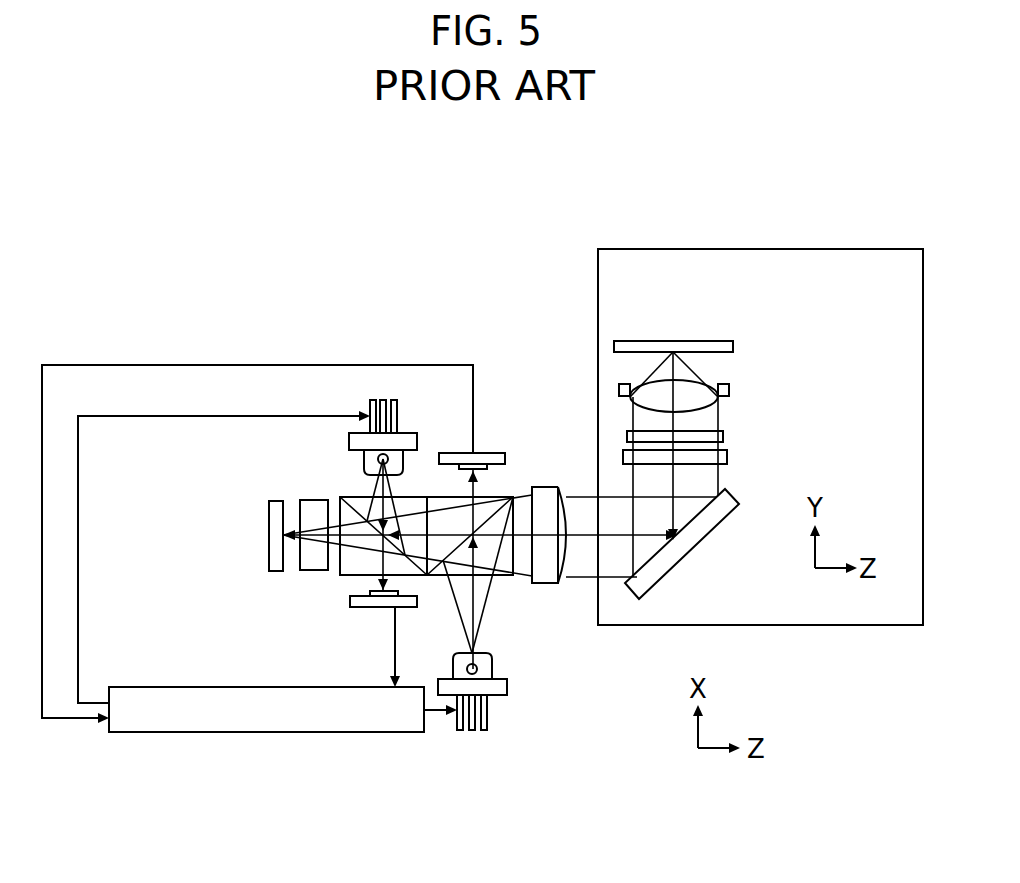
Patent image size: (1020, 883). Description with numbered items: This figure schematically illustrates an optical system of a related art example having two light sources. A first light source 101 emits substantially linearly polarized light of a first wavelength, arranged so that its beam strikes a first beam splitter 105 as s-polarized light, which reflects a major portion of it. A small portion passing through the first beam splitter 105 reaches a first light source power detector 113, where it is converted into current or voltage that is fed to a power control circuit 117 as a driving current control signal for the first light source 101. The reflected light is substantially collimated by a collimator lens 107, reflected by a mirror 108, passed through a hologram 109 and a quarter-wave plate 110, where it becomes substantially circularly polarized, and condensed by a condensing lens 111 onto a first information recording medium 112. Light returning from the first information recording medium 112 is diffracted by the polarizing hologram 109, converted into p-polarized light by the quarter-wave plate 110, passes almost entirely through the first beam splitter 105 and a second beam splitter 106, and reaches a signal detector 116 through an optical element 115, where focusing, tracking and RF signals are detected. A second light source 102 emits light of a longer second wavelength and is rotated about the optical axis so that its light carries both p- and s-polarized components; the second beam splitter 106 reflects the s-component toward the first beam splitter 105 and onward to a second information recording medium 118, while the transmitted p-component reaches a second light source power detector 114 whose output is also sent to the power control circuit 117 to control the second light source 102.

The first light source 101 is at (507, 688).
The second light source 102 is at (409, 432).
The first beam splitter 105 is at (443, 578).
The second beam splitter 106 is at (349, 576).
The collimator lens 107 is at (548, 583).
The mirror 108 is at (690, 555).
The hologram 109 is at (727, 457).
The quarter-wave plate 110 is at (723, 436).
The condensing lens 111 is at (729, 390).
The first information recording medium 112 is at (690, 317).
The second information recording medium 118 is at (705, 341).
The first light source power detector 113 is at (493, 452).
The second light source power detector 114 is at (365, 608).
The optical element 115 is at (314, 500).
The signal detector 116 is at (269, 525).
The power control circuit 117 is at (230, 733).